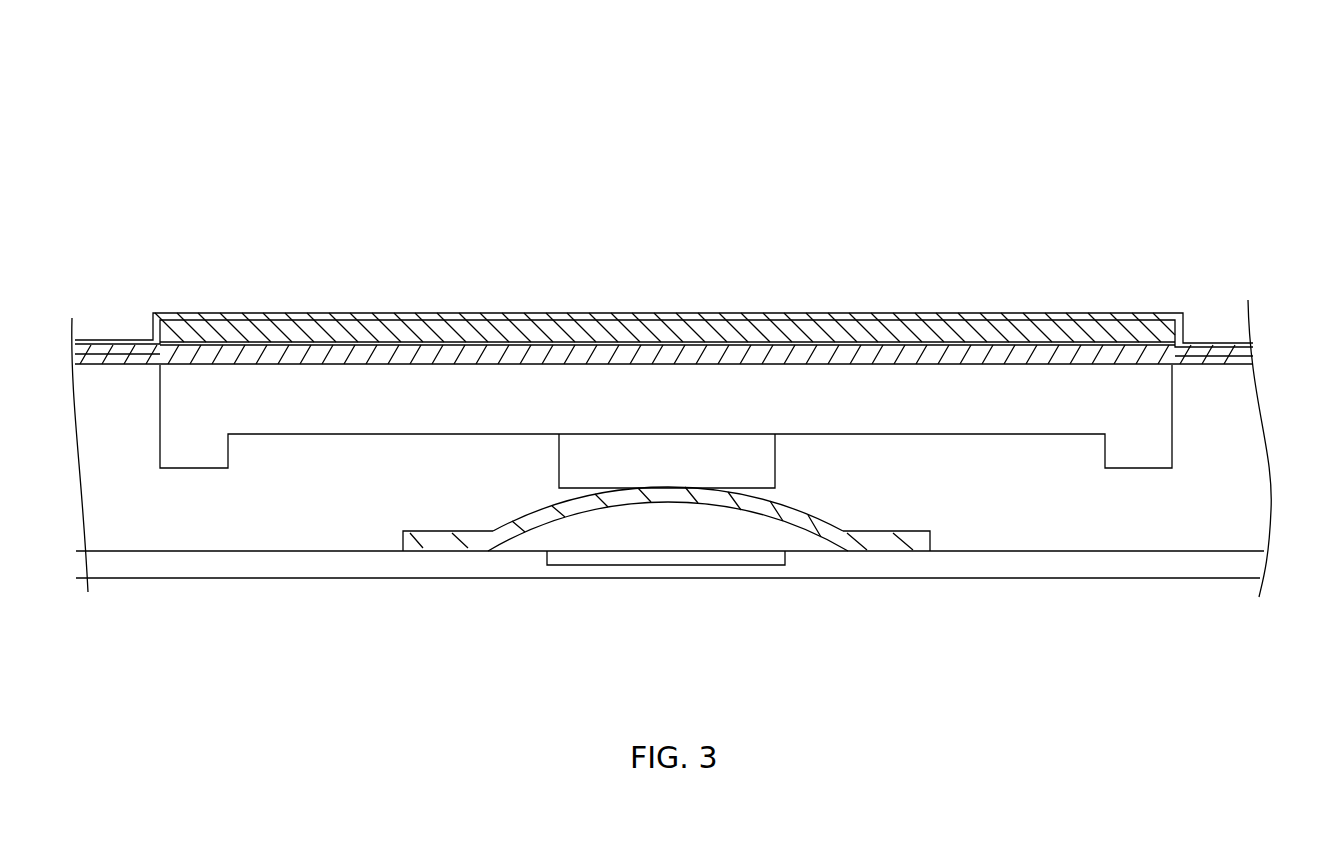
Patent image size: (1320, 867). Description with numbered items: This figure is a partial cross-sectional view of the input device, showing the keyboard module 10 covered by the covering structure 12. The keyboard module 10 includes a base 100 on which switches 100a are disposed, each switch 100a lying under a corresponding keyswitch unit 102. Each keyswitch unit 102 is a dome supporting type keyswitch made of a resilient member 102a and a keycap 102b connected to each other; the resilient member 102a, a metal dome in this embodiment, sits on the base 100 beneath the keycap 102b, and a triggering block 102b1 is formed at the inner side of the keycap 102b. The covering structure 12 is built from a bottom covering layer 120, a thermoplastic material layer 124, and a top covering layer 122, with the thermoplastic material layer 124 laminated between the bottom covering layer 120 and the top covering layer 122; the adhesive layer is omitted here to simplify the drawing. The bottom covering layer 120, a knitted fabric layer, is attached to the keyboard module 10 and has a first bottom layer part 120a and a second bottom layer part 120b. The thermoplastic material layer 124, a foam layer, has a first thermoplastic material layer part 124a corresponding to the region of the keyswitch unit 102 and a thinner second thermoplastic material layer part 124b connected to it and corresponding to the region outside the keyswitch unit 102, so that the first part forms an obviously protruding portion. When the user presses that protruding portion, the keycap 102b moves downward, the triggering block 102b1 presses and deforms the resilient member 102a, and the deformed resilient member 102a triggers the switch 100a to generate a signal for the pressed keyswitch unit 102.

The keyboard module 10 is at (138, 444).
The covering structure 12 is at (1273, 110).
The top covering layer 122 is at (790, 313).
The thermoplastic material layer 124 is at (1140, 163).
The first thermoplastic material layer part 124a is at (1070, 327).
The second thermoplastic material layer part 124b is at (1183, 343).
The bottom covering layer 120 is at (1313, 163).
The first bottom layer part 120a is at (1208, 352).
The second bottom layer part 120b is at (1165, 367).
The keyswitch unit 102 is at (452, 226).
The resilient member 102a is at (513, 528).
The keycap 102b is at (343, 397).
The triggering block 102b1 is at (618, 497).
The base 100 is at (1100, 578).
The switch 100a is at (705, 566).